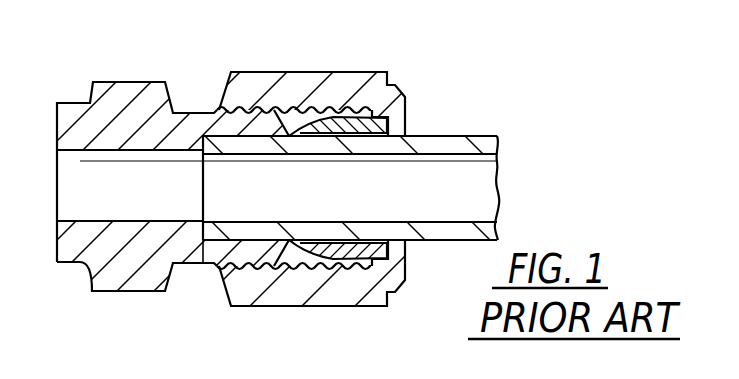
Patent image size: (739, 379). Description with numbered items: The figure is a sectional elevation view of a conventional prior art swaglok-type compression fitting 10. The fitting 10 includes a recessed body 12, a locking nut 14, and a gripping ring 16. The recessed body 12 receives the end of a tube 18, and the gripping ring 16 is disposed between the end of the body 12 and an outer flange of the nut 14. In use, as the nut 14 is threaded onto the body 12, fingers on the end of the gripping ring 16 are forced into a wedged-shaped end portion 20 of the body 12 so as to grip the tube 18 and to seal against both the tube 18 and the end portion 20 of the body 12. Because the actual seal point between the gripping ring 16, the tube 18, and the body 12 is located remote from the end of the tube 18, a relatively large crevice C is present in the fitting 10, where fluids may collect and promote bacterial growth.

The compression fitting 10 is at (269, 187).
The recessed body 12 is at (72, 255).
The locking nut 14 is at (297, 30).
The gripping ring 16 is at (335, 115).
The tube 18 is at (462, 136).
The wedged-shaped end portion 20 is at (313, 247).
The crevice C is at (200, 262).